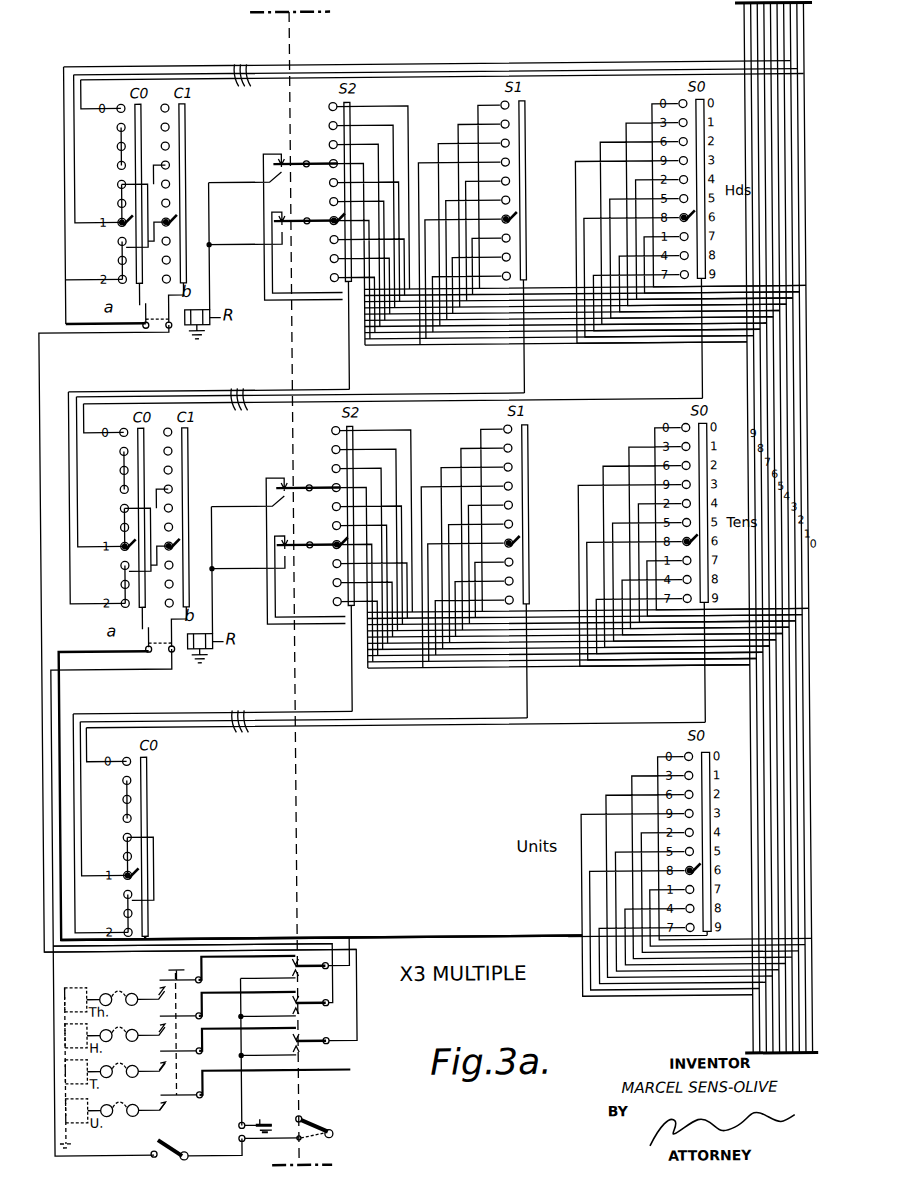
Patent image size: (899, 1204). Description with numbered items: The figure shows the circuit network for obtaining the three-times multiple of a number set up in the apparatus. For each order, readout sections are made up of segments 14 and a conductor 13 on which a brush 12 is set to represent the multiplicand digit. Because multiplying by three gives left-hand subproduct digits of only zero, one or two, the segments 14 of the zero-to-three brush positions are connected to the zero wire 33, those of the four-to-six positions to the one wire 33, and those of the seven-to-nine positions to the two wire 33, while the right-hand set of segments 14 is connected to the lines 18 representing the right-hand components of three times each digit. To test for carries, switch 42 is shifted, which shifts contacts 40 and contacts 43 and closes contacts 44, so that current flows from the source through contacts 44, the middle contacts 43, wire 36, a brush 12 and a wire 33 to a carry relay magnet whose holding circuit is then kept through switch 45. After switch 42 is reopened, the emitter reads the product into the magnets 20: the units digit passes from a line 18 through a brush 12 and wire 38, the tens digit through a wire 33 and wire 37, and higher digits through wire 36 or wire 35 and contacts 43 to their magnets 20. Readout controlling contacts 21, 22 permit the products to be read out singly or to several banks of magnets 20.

The brush 12 is at (421, 547).
The conductor 13 is at (438, 511).
The segments 14 is at (419, 518).
The lines 18 is at (760, 527).
The magnets 20 is at (97, 1067).
The readout controlling contacts 21 is at (195, 1034).
The readout controlling contacts 22 is at (151, 1048).
The wires 33 is at (247, 417).
The wire 35 is at (205, 926).
The wire 36 is at (192, 924).
The wire 37 is at (200, 926).
The wire 38 is at (465, 918).
The contacts 40 is at (275, 394).
The switch 42 is at (331, 1116).
The contacts 43 is at (274, 1040).
The contacts 44 is at (269, 1119).
The switch 45 is at (196, 1148).